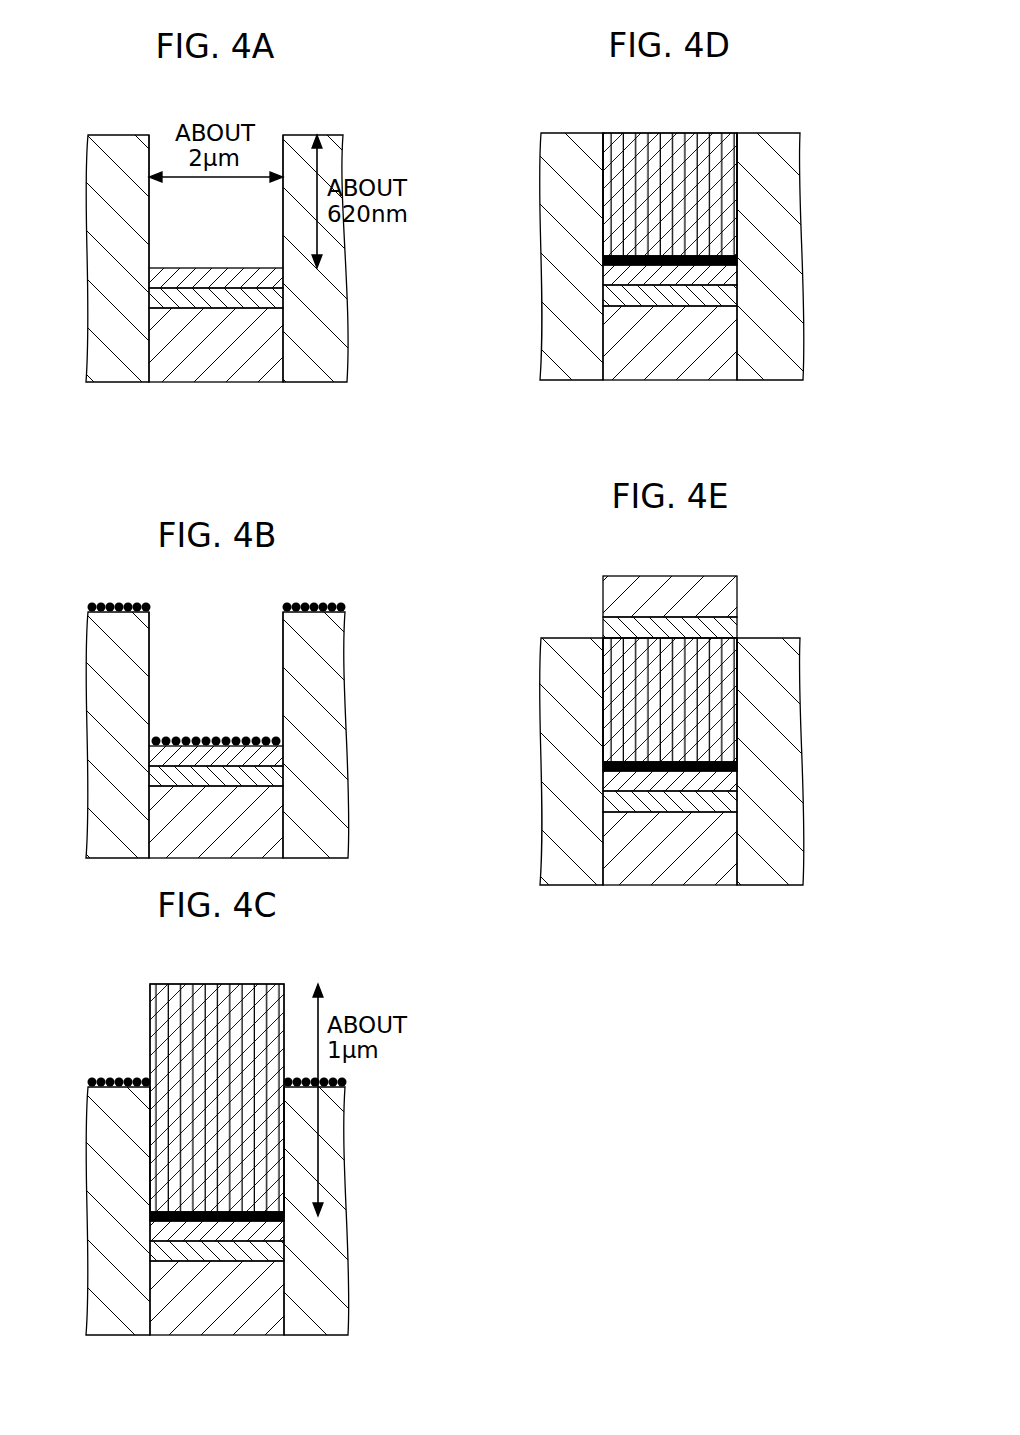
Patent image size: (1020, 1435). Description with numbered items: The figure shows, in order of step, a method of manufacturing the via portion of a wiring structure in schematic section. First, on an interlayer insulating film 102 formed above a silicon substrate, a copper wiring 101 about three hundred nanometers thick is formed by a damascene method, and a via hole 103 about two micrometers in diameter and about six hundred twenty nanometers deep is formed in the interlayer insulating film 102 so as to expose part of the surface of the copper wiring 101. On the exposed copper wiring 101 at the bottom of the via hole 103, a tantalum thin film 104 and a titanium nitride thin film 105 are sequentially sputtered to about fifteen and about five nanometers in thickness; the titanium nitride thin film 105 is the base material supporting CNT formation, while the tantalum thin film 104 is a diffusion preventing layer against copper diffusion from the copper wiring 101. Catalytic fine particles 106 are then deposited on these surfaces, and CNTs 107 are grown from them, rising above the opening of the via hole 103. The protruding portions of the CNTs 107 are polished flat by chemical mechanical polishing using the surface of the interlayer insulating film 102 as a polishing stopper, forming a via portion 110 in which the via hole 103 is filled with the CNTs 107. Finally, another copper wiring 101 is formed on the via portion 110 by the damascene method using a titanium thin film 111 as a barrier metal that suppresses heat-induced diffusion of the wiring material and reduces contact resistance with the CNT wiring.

In FIG. 4A, the copper wiring 101 is at (175, 358).
In FIG. 4B, the copper wiring 101 is at (158, 812).
In FIG. 4C, the copper wiring 101 is at (225, 1312).
In FIG. 4D, the copper wiring 101 is at (672, 357).
In FIG. 4E, the copper wiring 101 is at (672, 862).
In FIG. 4A, the interlayer insulating film 102 is at (116, 153).
In FIG. 4B, the interlayer insulating film 102 is at (322, 662).
In FIG. 4C, the interlayer insulating film 102 is at (107, 1226).
In FIG. 4D, the interlayer insulating film 102 is at (578, 358).
In FIG. 4E, the interlayer insulating film 102 is at (578, 862).
In FIG. 4A, the via hole 103 is at (149, 221).
In FIG. 4B, the via hole 103 is at (150, 673).
In FIG. 4C, the via hole 103 is at (150, 1149).
In FIG. 4D, the via hole 103 is at (605, 222).
In FIG. 4E, the via hole 103 is at (605, 715).
In FIG. 4A, the tantalum thin film 104 is at (217, 300).
In FIG. 4B, the tantalum thin film 104 is at (275, 773).
In FIG. 4C, the tantalum thin film 104 is at (273, 1250).
In FIG. 4D, the tantalum thin film 104 is at (722, 293).
In FIG. 4E, the tantalum thin film 104 is at (725, 800).
In FIG. 4A, the titanium nitride thin film 105 is at (253, 282).
In FIG. 4B, the titanium nitride thin film 105 is at (275, 751).
In FIG. 4C, the titanium nitride thin film 105 is at (270, 1232).
In FIG. 4D, the titanium nitride thin film 105 is at (722, 275).
In FIG. 4E, the titanium nitride thin film 105 is at (722, 783).
In FIG. 4B, the catalytic fine particles 106 is at (115, 603).
In FIG. 4C, the catalytic fine particles 106 is at (115, 1078).
In FIG. 4C, the CNTs 107 is at (208, 999).
In FIG. 4D, the CNTs 107 is at (722, 168).
In FIG. 4E, the CNTs 107 is at (722, 675).
In FIG. 4D, the via portion 110 is at (742, 203).
In FIG. 4E, the via portion 110 is at (745, 710).
In FIG. 4E, the titanium thin film 111 is at (722, 628).